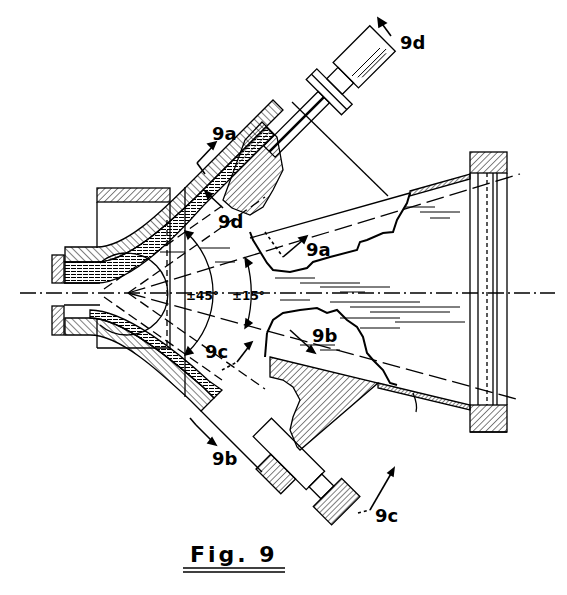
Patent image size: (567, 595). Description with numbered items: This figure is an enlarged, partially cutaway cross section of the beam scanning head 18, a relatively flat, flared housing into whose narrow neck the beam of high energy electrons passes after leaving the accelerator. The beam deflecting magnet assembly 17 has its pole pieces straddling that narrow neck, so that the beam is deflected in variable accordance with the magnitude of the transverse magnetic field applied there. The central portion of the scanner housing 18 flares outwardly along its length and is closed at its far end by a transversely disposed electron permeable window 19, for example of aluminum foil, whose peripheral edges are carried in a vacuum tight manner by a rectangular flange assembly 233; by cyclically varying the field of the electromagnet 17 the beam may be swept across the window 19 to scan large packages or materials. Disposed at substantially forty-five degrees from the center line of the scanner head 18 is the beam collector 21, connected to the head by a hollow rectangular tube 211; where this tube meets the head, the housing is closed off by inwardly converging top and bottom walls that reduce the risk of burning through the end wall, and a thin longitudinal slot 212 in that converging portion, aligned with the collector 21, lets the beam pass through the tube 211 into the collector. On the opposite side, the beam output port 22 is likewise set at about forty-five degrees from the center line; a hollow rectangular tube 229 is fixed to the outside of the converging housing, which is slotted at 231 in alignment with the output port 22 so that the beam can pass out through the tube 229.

The beam deflecting magnet assembly 17 is at (104, 188).
The beam scanning head 18 is at (409, 272).
The electron permeable window 19 is at (500, 326).
The beam collector 21 is at (383, 60).
The beam output port 22 is at (342, 518).
The hollow rectangular tube 211 is at (318, 107).
The thin longitudinal slot 212 is at (275, 150).
The hollow rectangular tube 229 is at (302, 482).
The longitudinal slot 231 is at (266, 472).
The rectangular flange assembly 233 is at (493, 438).